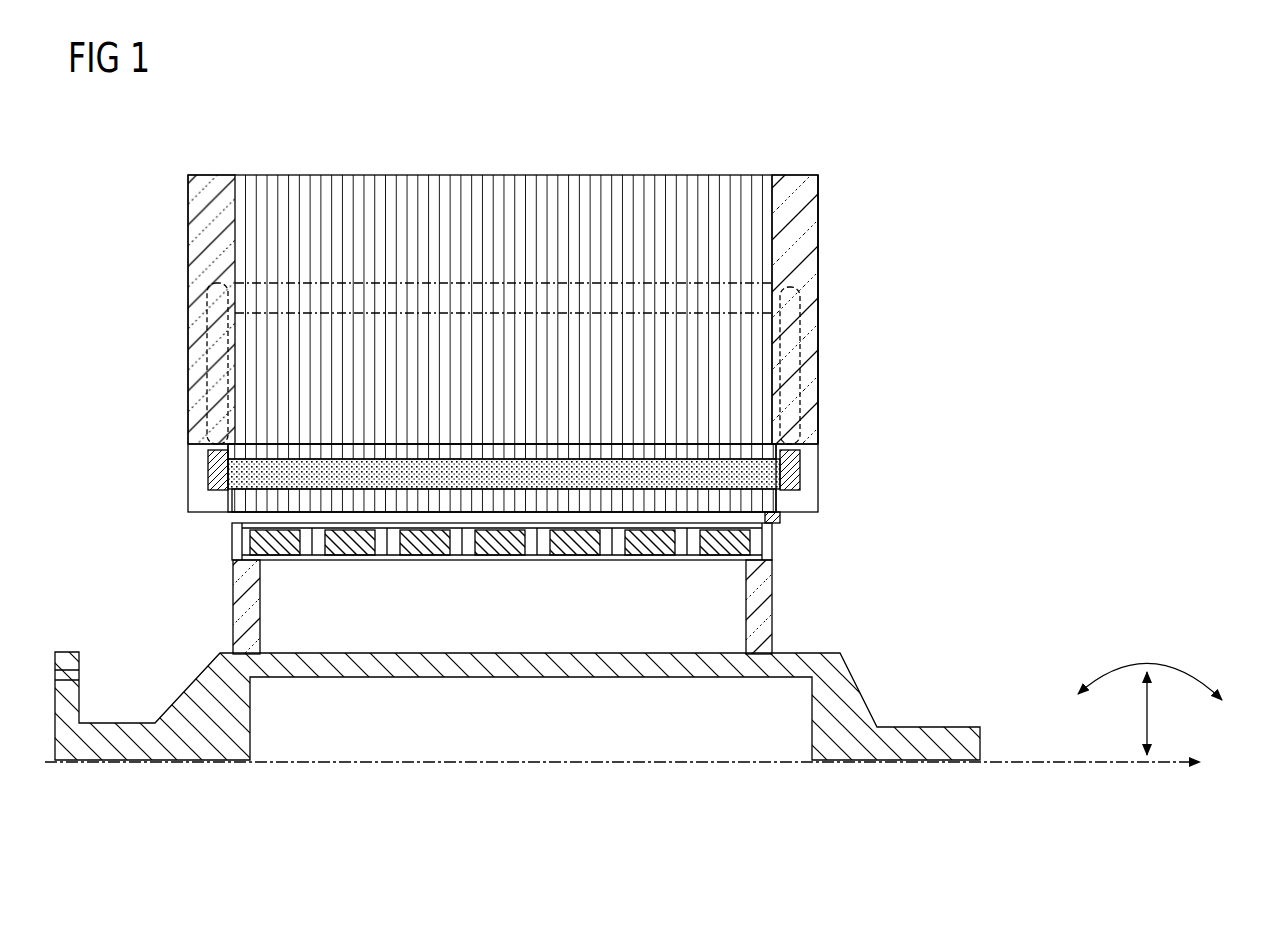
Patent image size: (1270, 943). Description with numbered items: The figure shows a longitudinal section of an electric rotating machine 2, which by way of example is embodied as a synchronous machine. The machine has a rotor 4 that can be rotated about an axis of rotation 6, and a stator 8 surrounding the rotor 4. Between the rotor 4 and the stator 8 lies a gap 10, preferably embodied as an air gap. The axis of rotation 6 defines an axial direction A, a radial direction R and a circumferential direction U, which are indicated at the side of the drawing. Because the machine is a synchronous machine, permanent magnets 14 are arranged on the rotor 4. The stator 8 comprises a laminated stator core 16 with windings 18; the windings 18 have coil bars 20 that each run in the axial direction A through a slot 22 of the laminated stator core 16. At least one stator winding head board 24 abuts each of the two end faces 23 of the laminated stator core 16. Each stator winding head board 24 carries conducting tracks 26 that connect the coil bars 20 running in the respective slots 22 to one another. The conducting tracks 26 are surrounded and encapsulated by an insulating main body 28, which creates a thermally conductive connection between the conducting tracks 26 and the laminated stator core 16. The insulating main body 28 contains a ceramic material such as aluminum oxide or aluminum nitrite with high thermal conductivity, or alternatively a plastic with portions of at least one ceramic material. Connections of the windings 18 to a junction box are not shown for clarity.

The electric rotating machine 2 is at (745, 130).
The rotor 4 is at (802, 604).
The axis of rotation 6 is at (1015, 760).
The stator 8 is at (855, 360).
The gap 10 is at (778, 522).
The permanent magnets 14 is at (250, 547).
The laminated stator core 16 is at (590, 175).
The windings 18 is at (207, 487).
The coil bars 20 is at (800, 472).
The slot 22 is at (785, 500).
The end faces 23 is at (200, 245).
The stator winding head board 24 is at (783, 208).
The conducting tracks 26 is at (205, 458).
The insulating main body 28 is at (812, 230).
The axial direction A is at (1175, 768).
The radial direction R is at (1150, 705).
The circumferential direction U is at (1188, 668).